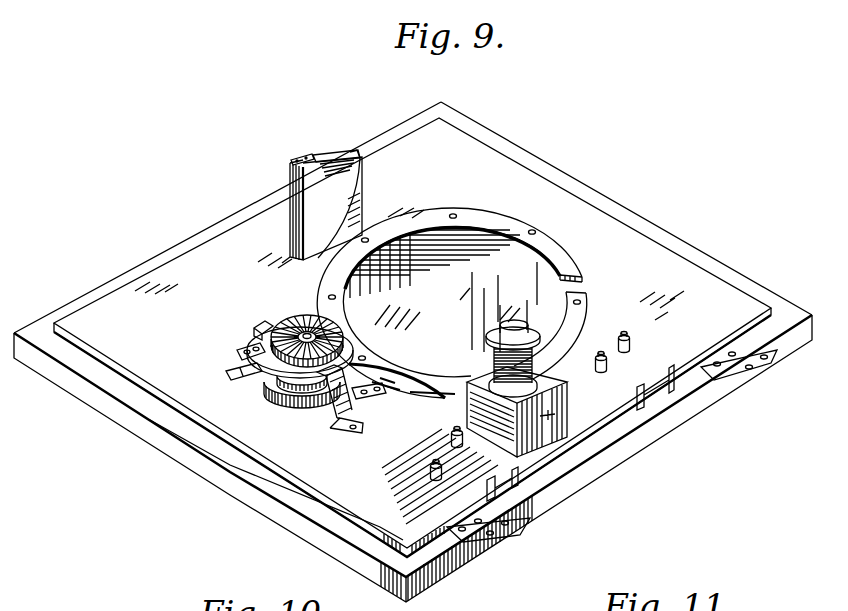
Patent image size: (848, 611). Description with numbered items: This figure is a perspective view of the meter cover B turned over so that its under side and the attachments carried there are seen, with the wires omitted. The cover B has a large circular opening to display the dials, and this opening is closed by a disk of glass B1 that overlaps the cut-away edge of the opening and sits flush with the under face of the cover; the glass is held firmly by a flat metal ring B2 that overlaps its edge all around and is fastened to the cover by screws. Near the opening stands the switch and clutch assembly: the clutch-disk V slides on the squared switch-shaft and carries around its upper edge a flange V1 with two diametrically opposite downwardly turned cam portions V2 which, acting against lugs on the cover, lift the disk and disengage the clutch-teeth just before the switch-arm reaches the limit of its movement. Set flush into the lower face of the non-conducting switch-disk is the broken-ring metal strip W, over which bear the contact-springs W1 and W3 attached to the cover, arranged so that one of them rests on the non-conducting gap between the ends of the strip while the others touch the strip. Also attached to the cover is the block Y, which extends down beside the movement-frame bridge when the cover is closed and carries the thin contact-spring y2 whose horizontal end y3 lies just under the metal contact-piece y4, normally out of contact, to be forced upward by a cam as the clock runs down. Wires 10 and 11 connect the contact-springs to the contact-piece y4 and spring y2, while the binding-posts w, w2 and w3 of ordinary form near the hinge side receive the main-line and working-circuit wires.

The cover B is at (413, 352).
The disk of glass B1 is at (452, 310).
The flat metal ring B2 is at (570, 266).
The clutch-disk V is at (293, 322).
The flange V1 is at (300, 360).
The downwardly-turned portions forming cams V2 is at (268, 322).
The metal strip W is at (300, 412).
The contact-spring W1 is at (369, 399).
The contact-spring W3 is at (245, 375).
The block Y is at (326, 208).
The contact-spring y2 is at (322, 158).
The horizontal end y3 is at (336, 143).
The metal contact-piece y4 is at (361, 159).
The wire 10 is at (339, 208).
The wire 11 is at (294, 265).
The binding-post w is at (420, 470).
The binding-post w2 is at (607, 362).
The binding-post w3 is at (630, 342).